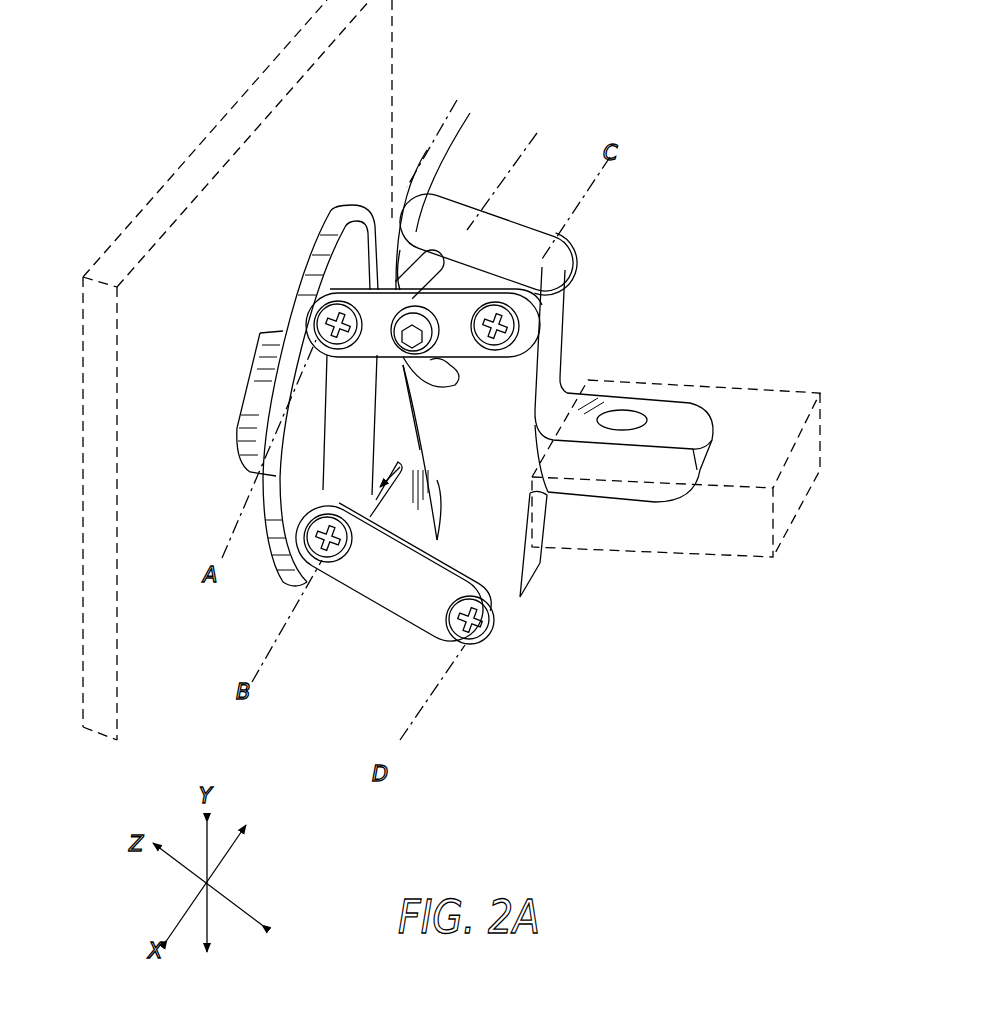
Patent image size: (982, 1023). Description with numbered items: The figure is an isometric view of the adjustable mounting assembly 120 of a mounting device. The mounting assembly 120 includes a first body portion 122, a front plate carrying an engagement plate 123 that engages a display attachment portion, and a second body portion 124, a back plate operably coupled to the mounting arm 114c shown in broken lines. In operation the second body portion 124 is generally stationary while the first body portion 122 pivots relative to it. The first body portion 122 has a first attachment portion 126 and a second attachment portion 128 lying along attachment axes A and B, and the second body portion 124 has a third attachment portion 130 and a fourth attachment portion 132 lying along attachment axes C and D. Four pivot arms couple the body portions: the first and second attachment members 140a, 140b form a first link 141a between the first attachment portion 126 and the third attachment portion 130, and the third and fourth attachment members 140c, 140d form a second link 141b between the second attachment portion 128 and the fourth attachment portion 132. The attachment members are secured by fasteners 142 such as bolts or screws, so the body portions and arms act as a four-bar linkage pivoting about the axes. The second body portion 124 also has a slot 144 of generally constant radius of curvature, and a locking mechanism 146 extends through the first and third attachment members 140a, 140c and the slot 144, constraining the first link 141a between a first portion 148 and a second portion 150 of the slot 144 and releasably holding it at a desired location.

The adjustable mounting assembly 120 is at (637, 118).
The mounting arm 114c is at (677, 383).
The first body portion 122 is at (347, 417).
The engagement plate 123 is at (297, 312).
The second body portion 124 is at (522, 420).
The first attachment portion 126 is at (363, 253).
The second attachment portion 128 is at (403, 477).
The third attachment portion 130 is at (568, 242).
The fourth attachment portion 132 is at (524, 593).
The first attachment member 140a is at (463, 357).
The second attachment member 140b is at (434, 252).
The third attachment member 140c is at (427, 598).
The fourth attachment member 140d is at (428, 519).
The first link 141a is at (345, 293).
The second link 141b is at (367, 597).
The fastener 142 is at (323, 330).
The slot 144 is at (543, 258).
The locking mechanism 146 is at (395, 305).
The first portion of the slot 148 is at (444, 277).
The second portion of the slot 150 is at (576, 262).